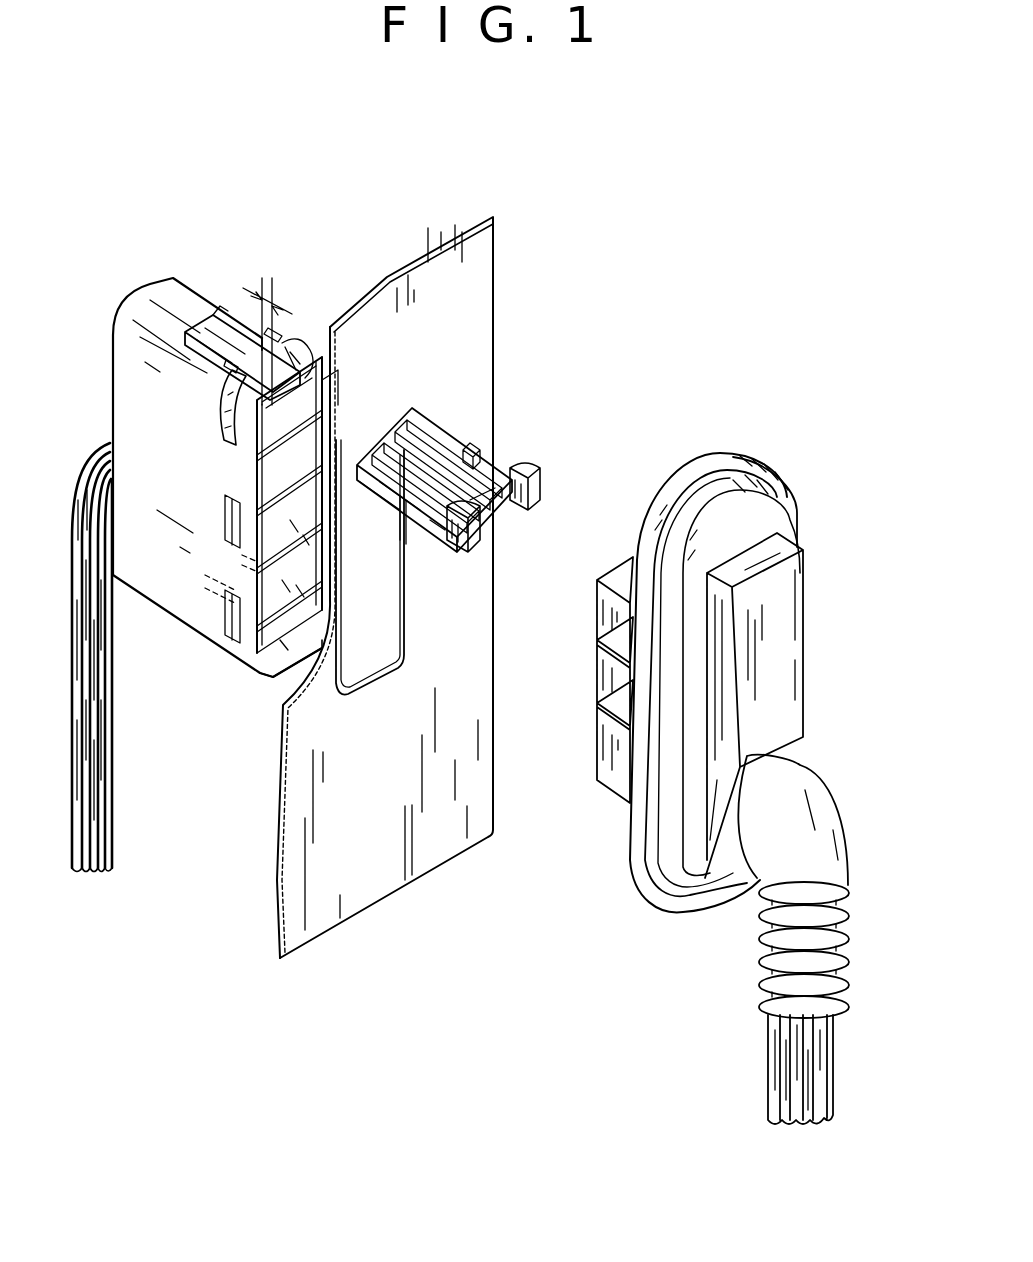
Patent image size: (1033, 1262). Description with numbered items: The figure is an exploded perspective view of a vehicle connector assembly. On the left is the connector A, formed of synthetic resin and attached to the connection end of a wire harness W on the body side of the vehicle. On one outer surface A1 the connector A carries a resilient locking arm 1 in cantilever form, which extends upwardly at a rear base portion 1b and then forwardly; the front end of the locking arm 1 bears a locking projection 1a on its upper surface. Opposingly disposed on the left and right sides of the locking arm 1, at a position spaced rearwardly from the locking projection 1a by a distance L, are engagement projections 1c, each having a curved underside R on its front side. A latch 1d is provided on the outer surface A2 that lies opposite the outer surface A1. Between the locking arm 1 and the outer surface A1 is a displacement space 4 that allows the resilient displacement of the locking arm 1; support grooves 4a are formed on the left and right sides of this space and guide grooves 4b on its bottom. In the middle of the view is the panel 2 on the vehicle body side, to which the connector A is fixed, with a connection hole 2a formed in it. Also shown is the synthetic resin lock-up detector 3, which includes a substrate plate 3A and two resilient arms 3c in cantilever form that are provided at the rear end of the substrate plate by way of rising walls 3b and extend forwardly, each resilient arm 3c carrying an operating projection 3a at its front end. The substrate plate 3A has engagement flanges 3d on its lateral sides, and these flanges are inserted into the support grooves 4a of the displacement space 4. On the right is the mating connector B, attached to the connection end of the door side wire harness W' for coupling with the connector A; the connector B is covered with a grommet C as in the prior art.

The connector A is at (135, 420).
The outer surface A1 is at (167, 310).
The outer surface A2 is at (160, 608).
The resilient locking arm 1 is at (248, 337).
The locking projection 1a is at (295, 345).
The rear base portion 1b is at (217, 310).
The engagement projections 1c is at (277, 337).
The latch 1d is at (273, 680).
The distance L is at (267, 324).
The curved underside R is at (233, 397).
The displacement space 4 is at (289, 505).
The support grooves 4a is at (247, 437).
The guide grooves 4b is at (320, 365).
The panel 2 is at (488, 313).
The connection hole 2a is at (398, 638).
The lock-up detector 3 is at (493, 460).
The operating projections 3a is at (466, 446).
The rising walls 3b is at (373, 443).
The resilient arms 3c is at (425, 458).
The engagement flanges 3d is at (427, 510).
The substrate plate 3A is at (487, 505).
The connector B is at (613, 777).
The grommet C is at (793, 623).
The wire harness W is at (112, 657).
The door side wire harness W' is at (754, 939).